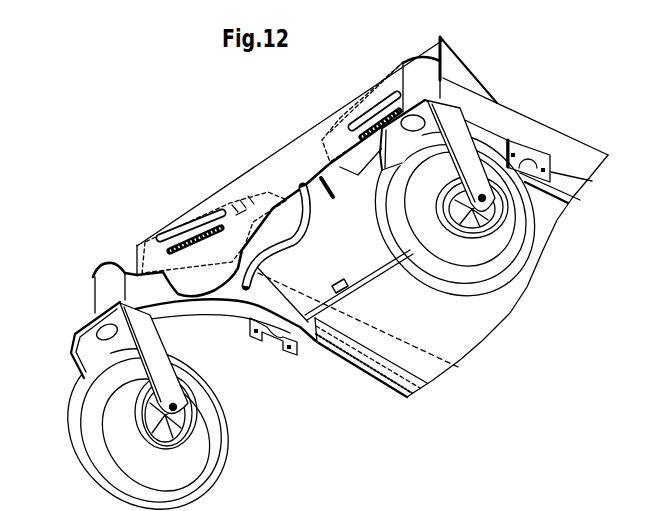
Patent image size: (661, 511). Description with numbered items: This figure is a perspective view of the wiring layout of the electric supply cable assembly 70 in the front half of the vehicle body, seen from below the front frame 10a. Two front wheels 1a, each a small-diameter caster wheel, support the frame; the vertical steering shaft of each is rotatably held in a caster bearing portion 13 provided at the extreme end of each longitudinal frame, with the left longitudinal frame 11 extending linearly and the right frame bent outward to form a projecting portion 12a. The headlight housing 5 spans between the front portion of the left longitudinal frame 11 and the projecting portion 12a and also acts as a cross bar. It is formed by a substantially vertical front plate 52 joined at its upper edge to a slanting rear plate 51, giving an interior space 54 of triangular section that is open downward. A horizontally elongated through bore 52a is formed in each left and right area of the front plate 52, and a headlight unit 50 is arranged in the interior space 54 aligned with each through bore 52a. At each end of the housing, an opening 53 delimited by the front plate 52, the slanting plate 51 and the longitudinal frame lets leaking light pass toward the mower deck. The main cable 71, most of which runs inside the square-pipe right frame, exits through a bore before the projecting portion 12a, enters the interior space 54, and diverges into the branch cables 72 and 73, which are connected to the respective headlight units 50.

The headlight housing 5 is at (297, 132).
The front plate 52 is at (265, 168).
The through bore 52a is at (205, 221).
The headlight unit 50 is at (170, 232).
The caster bearing portion 13 is at (412, 70).
The rear plate 51 is at (466, 66).
The opening 53 is at (484, 83).
The left longitudinal frame 11 is at (516, 127).
The front frame 10a is at (573, 141).
The projecting portion 12a is at (192, 310).
The interior space 54 is at (342, 184).
The front wheel 1a is at (455, 289).
The branch cable 72 is at (290, 226).
The branch cable 73 is at (309, 195).
The main cable 71 is at (259, 268).
The electric supply cable assembly 70 is at (362, 279).